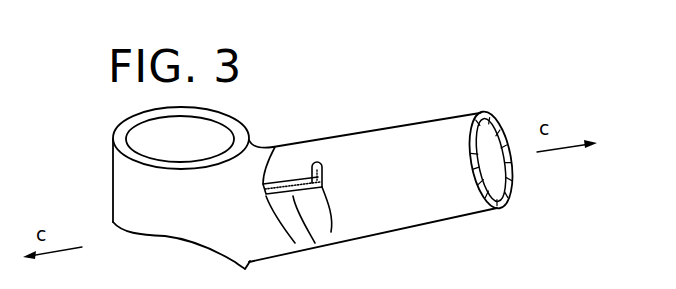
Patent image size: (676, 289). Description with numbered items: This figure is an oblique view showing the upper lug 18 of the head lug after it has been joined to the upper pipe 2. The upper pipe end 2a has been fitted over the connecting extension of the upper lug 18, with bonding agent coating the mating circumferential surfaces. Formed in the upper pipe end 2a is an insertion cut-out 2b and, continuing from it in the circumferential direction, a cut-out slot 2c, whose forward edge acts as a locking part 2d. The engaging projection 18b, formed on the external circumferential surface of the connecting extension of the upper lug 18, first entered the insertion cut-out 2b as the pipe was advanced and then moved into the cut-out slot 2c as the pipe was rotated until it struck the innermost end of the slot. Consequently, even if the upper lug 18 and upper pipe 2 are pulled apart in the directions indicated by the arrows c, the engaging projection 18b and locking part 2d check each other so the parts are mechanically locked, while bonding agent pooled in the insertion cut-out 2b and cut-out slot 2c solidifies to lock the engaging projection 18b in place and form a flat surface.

The upper pipe 2 is at (455, 135).
The upper pipe end 2a is at (400, 130).
The insertion cut-out 2b is at (315, 243).
The cut-out slot 2c is at (331, 232).
The locking part 2d is at (312, 165).
The upper lug 18 is at (135, 192).
The engaging projection 18b is at (319, 165).